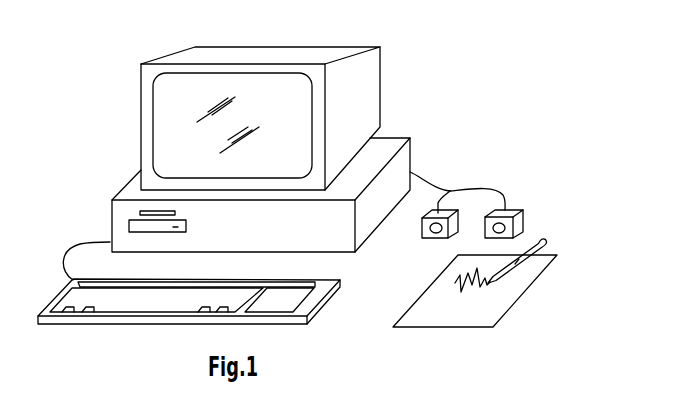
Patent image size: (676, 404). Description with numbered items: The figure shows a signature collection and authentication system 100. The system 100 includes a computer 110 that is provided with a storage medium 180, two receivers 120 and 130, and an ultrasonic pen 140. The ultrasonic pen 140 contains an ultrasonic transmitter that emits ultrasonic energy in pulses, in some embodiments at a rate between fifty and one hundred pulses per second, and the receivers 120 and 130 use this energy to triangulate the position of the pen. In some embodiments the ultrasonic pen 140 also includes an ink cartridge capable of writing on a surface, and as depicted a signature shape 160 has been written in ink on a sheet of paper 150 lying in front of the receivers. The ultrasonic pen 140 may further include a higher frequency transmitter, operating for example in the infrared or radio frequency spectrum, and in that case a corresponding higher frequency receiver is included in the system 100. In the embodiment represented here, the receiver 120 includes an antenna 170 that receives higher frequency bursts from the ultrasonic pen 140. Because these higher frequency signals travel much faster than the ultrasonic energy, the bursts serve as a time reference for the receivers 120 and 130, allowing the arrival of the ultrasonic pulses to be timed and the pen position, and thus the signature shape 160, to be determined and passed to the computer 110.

The signature collection and authentication system 100 is at (508, 98).
The computer 110 is at (388, 142).
The receiver 120 is at (438, 238).
The receiver 130 is at (517, 208).
The ultrasonic pen 140 is at (553, 243).
The paper 150 is at (517, 298).
The signature shape 160 is at (465, 287).
The antenna 170 is at (450, 191).
The storage medium 180 is at (130, 222).